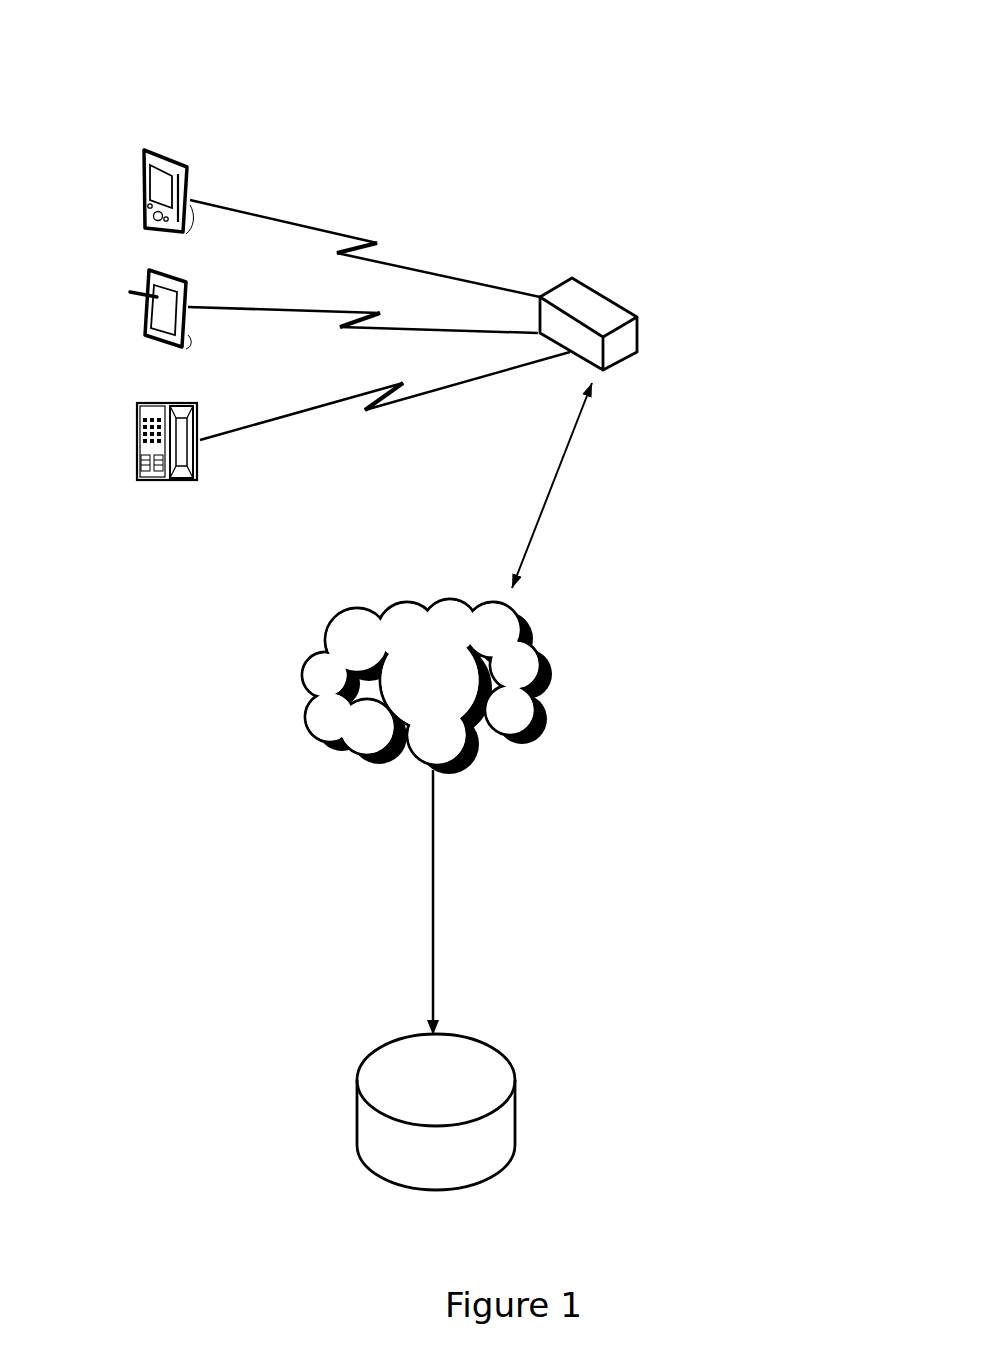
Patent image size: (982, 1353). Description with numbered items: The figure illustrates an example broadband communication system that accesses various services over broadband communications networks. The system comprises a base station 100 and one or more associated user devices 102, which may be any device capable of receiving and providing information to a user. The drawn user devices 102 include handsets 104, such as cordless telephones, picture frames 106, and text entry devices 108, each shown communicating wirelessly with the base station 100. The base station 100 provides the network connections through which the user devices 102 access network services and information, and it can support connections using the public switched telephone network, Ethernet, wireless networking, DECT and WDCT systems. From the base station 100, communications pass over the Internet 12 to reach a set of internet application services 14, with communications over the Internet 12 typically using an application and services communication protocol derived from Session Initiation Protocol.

The user devices 102 is at (165, 97).
The picture frames 106 is at (147, 192).
The text entry devices 108 is at (160, 310).
The handsets 104 is at (137, 455).
The base station 100 is at (585, 305).
The Internet 12 is at (527, 643).
The internet application services 14 is at (455, 1072).